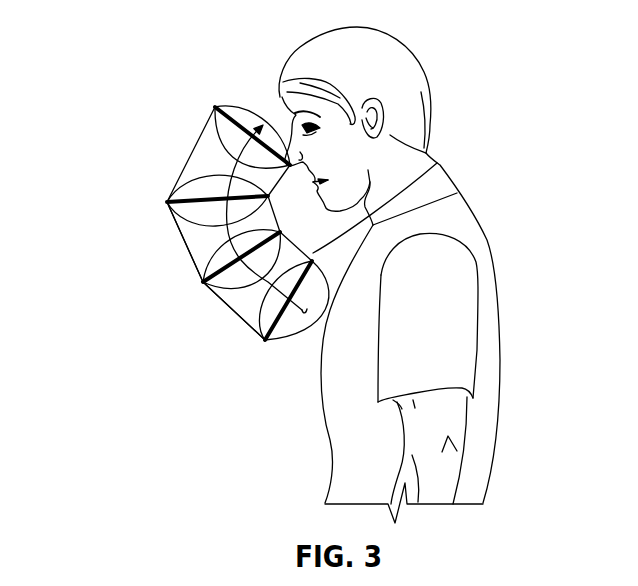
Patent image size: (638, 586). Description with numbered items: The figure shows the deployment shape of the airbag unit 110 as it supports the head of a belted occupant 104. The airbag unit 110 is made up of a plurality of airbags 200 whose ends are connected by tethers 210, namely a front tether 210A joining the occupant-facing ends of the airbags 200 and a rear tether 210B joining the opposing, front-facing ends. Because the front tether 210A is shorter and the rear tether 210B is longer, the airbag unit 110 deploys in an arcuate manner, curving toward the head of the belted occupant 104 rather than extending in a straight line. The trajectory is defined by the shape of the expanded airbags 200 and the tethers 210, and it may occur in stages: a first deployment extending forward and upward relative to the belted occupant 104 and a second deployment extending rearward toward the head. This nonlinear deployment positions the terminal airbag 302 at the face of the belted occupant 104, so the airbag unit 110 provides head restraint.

The belted occupant 104 is at (477, 263).
The airbag unit 110 is at (203, 286).
The airbags 200 is at (255, 334).
The tethers 210 is at (308, 194).
The front tether 210A is at (438, 166).
The rear tether 210B is at (185, 240).
The terminal airbag 302 is at (225, 130).